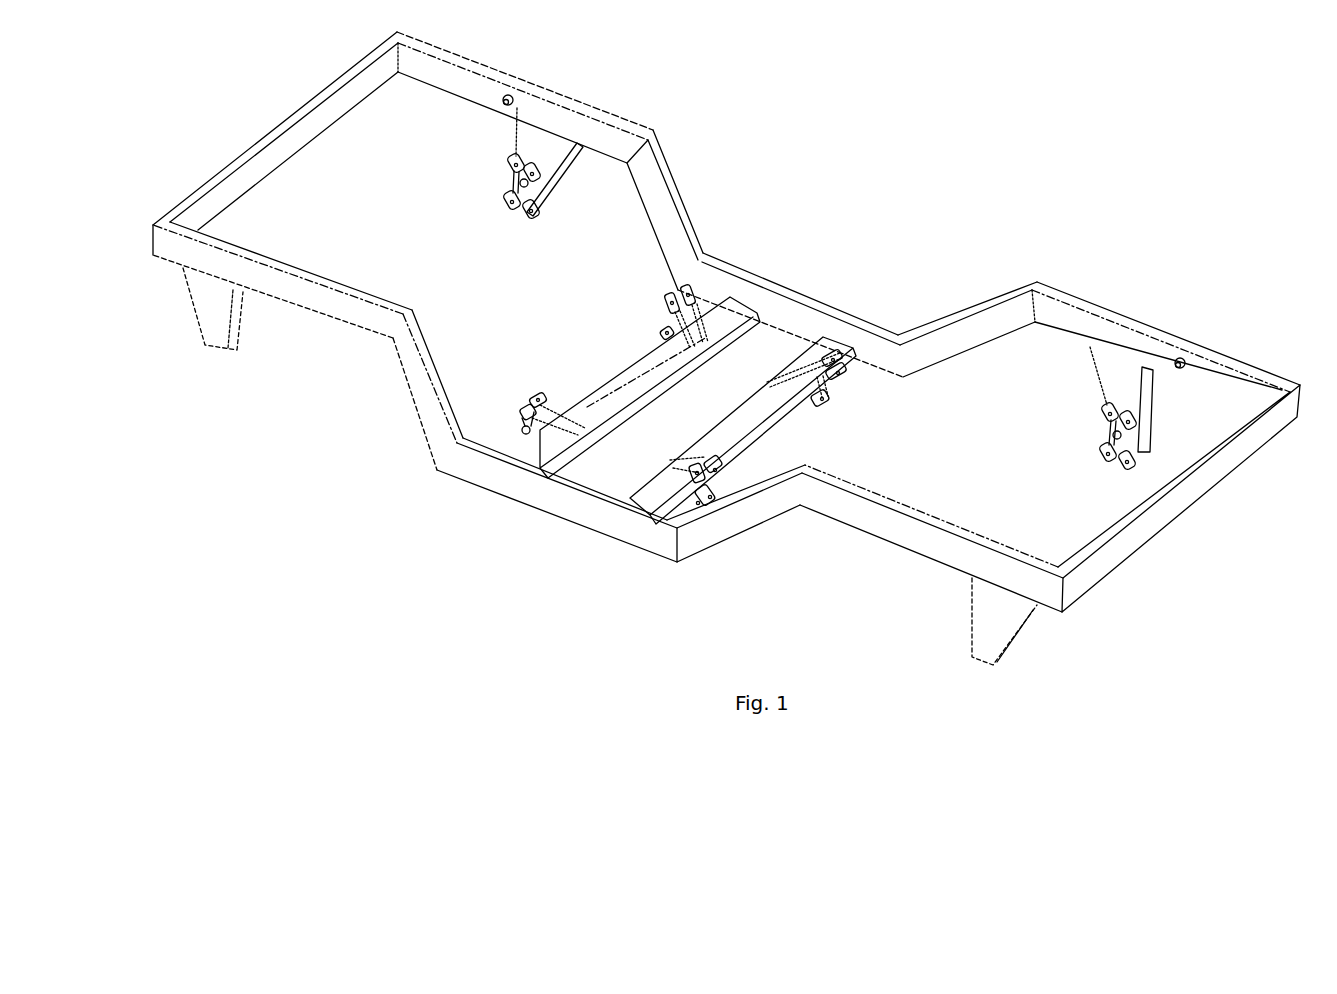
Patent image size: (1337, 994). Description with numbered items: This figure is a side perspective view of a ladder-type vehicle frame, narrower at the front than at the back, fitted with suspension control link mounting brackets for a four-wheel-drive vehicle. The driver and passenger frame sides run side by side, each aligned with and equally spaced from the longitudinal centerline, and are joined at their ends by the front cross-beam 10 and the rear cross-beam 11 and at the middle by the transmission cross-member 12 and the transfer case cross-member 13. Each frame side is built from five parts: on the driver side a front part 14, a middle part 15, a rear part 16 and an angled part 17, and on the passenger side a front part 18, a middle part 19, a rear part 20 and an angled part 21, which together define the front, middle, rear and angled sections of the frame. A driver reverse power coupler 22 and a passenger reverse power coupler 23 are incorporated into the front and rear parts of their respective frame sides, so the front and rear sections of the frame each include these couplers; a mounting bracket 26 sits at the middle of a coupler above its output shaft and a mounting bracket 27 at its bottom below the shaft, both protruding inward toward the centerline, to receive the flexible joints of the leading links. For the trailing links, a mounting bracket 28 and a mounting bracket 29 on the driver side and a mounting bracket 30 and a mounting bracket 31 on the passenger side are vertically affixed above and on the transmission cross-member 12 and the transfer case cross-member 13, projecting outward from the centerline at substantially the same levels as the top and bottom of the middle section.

The front cross-beam 10 is at (1183, 499).
The rear cross-beam 11 is at (300, 122).
The transmission cross-member 12 is at (737, 405).
The transfer case cross-member 13 is at (638, 375).
The front part 14 is at (1133, 338).
The middle part 15 is at (778, 292).
The rear part 16 is at (550, 107).
The angled part 17 is at (680, 210).
The front part 18 is at (907, 540).
The middle part 19 is at (560, 508).
The rear part 20 is at (314, 305).
The angled part 21 is at (420, 400).
The driver reverse power coupler 22 is at (548, 152).
The passenger reverse power coupler 23 is at (223, 312).
The mounting bracket 26 is at (512, 162).
The mounting bracket 27 is at (508, 202).
The mounting bracket 28 is at (662, 300).
The mounting bracket 29 is at (663, 333).
The mounting bracket 30 is at (540, 405).
The mounting bracket 31 is at (527, 440).